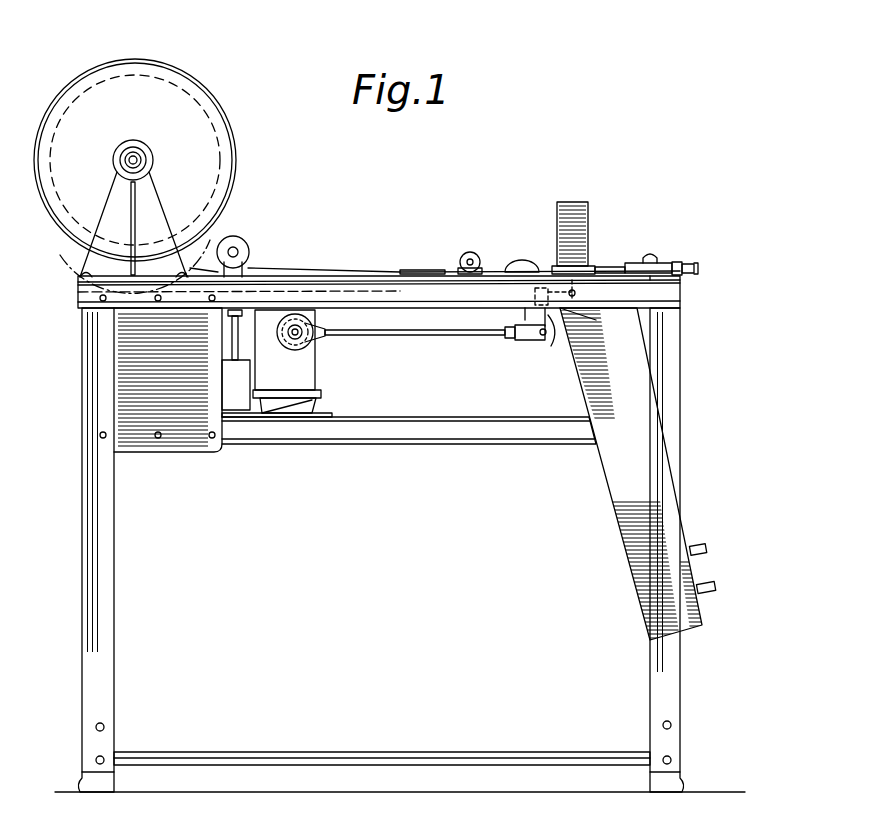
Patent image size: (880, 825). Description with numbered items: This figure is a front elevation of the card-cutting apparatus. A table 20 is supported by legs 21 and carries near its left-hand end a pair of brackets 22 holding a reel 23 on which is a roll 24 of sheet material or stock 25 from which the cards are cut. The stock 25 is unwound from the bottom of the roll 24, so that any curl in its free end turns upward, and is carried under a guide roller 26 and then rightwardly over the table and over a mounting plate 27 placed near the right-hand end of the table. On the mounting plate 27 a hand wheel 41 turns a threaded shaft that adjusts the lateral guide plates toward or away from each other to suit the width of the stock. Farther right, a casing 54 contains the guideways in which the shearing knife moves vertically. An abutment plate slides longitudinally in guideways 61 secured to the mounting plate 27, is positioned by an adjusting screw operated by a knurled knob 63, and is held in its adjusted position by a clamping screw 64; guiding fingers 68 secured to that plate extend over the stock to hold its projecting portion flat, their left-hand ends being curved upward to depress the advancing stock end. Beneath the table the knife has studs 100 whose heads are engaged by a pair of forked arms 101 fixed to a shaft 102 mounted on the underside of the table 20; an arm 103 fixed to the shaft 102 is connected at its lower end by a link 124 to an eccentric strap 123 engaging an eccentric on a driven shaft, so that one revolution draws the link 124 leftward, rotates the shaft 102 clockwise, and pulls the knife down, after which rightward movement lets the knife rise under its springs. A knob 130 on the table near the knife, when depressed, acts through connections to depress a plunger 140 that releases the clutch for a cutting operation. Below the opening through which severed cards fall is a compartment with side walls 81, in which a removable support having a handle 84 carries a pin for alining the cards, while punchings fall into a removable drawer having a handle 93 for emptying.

The table 20 is at (379, 292).
The legs 21 is at (123, 526).
The brackets 22 is at (160, 215).
The reel 23 is at (224, 124).
The roll 24 is at (238, 147).
The stock 25 is at (198, 269).
The guide roller 26 is at (248, 250).
The mounting plate 27 is at (422, 270).
The hand wheel 41 is at (473, 255).
The knob 130 is at (522, 252).
The casing 54 is at (590, 226).
The guiding fingers 68 is at (607, 267).
The guideways 61 is at (633, 276).
The clamping screw 64 is at (655, 255).
The knurled knob 63 is at (696, 268).
The studs 100 is at (577, 294).
The forked arms 101 is at (583, 313).
The shaft 102 is at (535, 296).
The arm 103 is at (550, 346).
The link 124 is at (440, 345).
The eccentric strap 123 is at (312, 345).
The plunger 140 is at (233, 326).
The side walls 81 is at (608, 470).
The handle 84 is at (708, 548).
The handle 93 is at (716, 585).